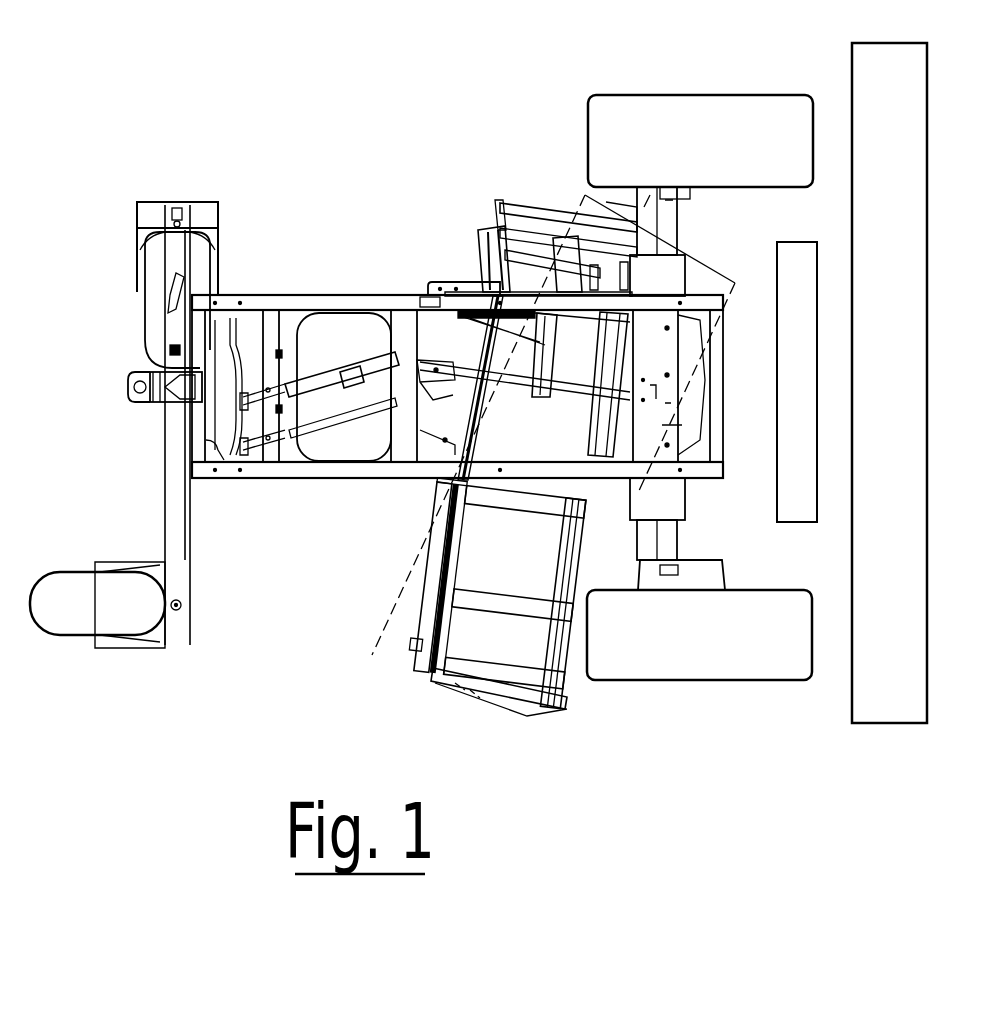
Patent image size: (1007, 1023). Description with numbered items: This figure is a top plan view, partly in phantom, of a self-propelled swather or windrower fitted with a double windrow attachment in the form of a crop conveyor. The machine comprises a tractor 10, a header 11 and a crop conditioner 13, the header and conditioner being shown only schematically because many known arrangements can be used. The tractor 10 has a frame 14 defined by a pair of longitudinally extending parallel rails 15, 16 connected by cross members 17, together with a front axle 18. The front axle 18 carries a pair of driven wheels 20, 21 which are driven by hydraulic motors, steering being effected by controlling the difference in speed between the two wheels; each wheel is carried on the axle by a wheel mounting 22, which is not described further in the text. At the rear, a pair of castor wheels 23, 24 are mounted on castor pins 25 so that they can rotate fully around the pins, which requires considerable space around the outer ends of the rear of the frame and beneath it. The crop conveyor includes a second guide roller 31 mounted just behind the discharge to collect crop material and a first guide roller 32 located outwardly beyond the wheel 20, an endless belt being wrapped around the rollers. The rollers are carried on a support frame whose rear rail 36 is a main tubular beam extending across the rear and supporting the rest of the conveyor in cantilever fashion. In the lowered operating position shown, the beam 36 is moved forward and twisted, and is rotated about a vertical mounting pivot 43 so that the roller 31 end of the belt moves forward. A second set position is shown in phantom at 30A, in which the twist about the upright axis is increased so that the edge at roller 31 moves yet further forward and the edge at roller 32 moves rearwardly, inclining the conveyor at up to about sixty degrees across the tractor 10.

The tractor 10 is at (351, 225).
The header 11 is at (858, 60).
The crop conditioner 13 is at (792, 255).
The frame 14 is at (341, 281).
The longitudinally extending parallel rail 15 is at (418, 296).
The longitudinally extending parallel rail 16 is at (376, 466).
The cross members 17 is at (278, 328).
The front axle 18 is at (660, 362).
The driven wheel 20 is at (688, 683).
The driven wheel 21 is at (728, 118).
The wheel hub 22 is at (704, 210).
The castor wheel 23 is at (90, 660).
The castor wheel 24 is at (152, 298).
The castor pins 25 is at (182, 212).
The second position of crop conveyor 30A is at (386, 645).
The second guide roller 31 is at (553, 225).
The first guide roller 32 is at (556, 700).
The rear rail 36 is at (430, 577).
The vertical mounting pivot 43 is at (490, 390).